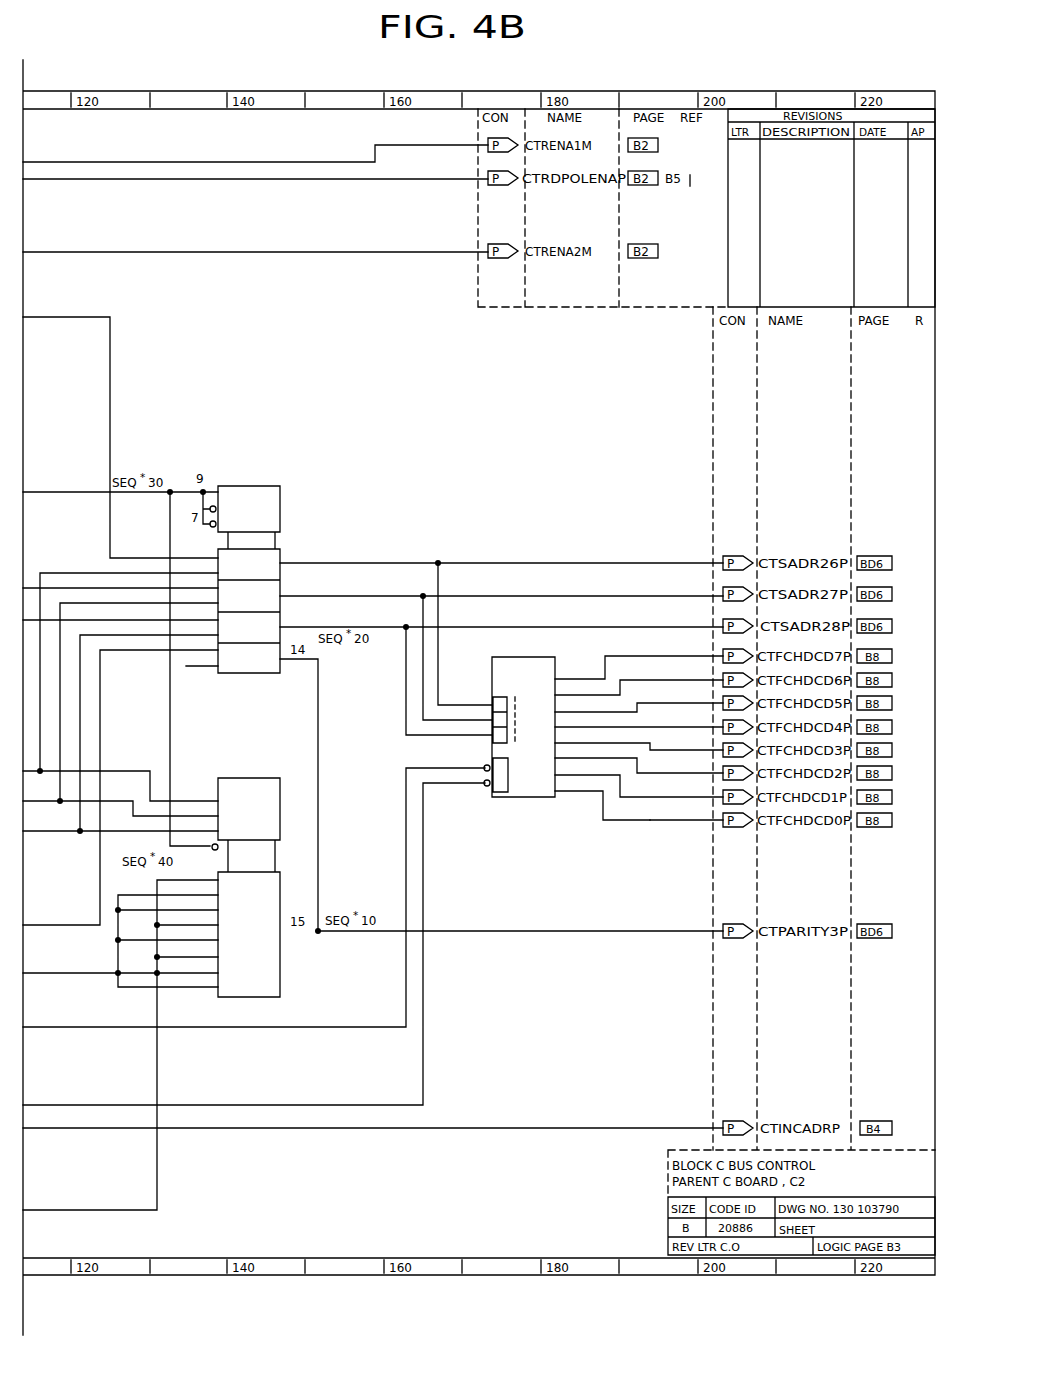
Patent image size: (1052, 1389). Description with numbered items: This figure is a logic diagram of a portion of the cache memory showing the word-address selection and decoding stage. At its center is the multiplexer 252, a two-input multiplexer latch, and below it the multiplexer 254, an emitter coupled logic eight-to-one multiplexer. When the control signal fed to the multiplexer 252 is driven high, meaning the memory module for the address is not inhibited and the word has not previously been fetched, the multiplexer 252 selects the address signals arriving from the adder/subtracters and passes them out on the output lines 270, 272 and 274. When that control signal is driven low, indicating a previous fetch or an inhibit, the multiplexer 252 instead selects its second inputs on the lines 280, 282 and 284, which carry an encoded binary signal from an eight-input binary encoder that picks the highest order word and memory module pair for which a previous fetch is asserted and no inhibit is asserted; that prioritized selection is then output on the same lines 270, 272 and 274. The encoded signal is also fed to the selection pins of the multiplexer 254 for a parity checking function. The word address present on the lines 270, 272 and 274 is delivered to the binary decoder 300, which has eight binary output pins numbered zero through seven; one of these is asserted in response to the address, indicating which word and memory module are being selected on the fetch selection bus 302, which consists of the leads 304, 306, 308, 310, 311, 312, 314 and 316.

The multiplexer 252 is at (282, 492).
The multiplexer 254 is at (282, 787).
The output line 270 is at (455, 560).
The output line 272 is at (490, 593).
The output line 274 is at (540, 624).
The second input line 280 is at (80, 706).
The second input line 282 is at (60, 670).
The second input line 284 is at (100, 743).
The binary decoder 300 is at (490, 797).
The fetch selection bus 302 is at (648, 823).
The lead 304 is at (636, 818).
The lead 306 is at (684, 799).
The lead 308 is at (592, 760).
The lead 310 is at (595, 741).
The lead 311 is at (665, 725).
The lead 312 is at (640, 701).
The lead 314 is at (695, 678).
The lead 316 is at (618, 654).